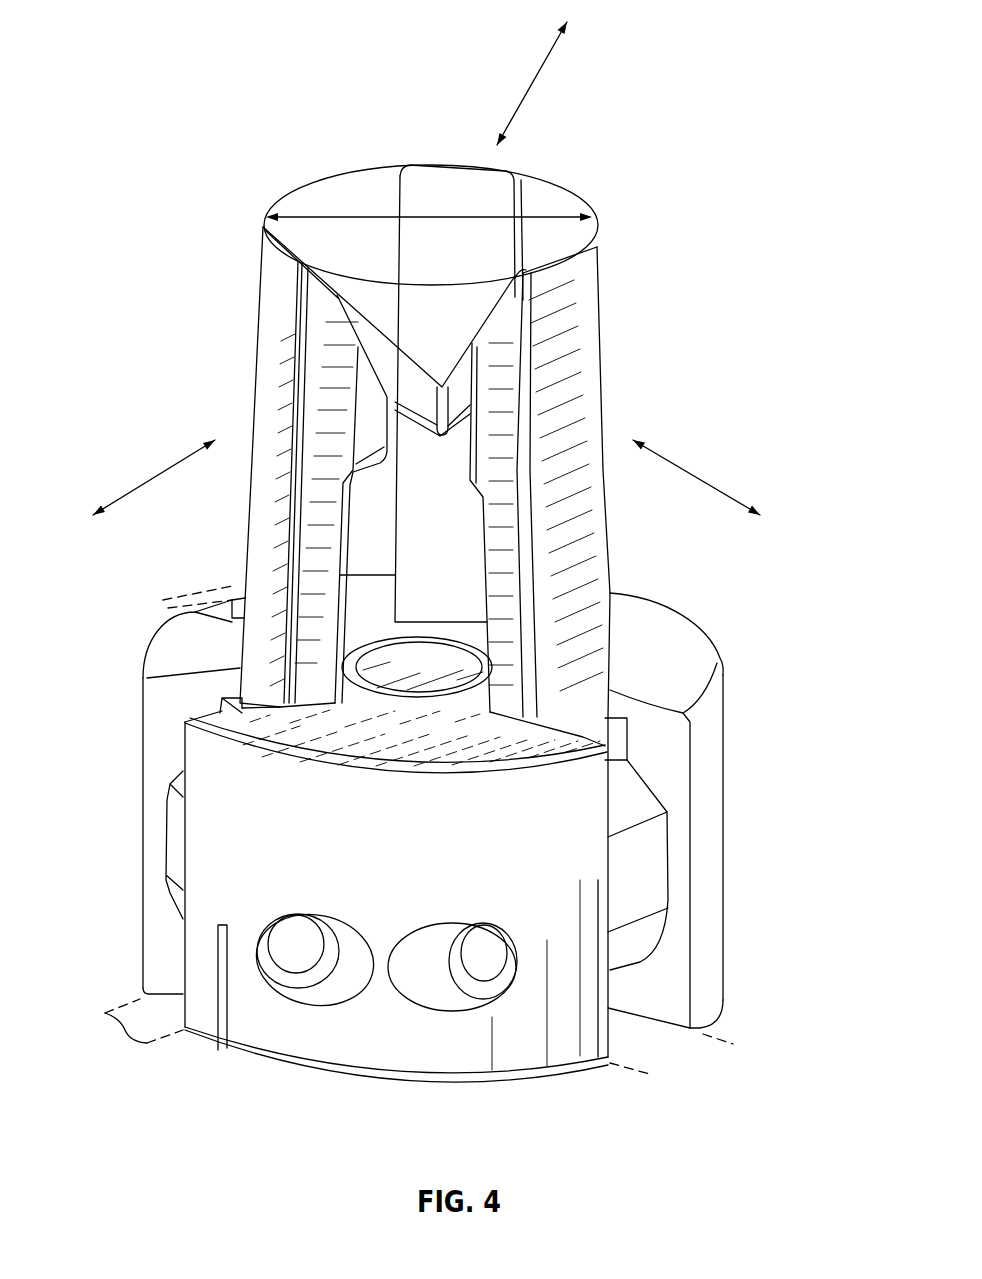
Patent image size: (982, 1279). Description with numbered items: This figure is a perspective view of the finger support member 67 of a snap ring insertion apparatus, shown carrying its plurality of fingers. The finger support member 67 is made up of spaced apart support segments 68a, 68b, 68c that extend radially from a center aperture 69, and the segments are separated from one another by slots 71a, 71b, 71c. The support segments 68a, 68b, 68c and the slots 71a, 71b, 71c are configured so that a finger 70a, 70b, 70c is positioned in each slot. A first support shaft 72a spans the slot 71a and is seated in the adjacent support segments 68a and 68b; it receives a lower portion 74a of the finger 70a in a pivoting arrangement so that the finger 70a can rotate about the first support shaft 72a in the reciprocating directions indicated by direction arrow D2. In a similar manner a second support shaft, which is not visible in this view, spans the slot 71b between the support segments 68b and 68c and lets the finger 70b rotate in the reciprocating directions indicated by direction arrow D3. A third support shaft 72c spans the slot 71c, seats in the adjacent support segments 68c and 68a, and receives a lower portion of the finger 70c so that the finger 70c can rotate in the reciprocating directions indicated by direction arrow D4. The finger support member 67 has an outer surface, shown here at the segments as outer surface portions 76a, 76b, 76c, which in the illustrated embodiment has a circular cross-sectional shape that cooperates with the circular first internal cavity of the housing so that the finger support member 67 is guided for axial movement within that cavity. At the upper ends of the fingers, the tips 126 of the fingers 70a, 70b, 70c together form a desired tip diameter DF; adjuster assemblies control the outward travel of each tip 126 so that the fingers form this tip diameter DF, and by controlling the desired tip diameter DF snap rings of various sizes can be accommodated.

The finger support member 67 is at (683, 638).
The support segment 68a is at (308, 1050).
The support segment 68b is at (723, 783).
The support segment 68c is at (185, 632).
The center aperture 69 is at (418, 652).
The finger 70a is at (582, 377).
The finger 70b is at (421, 176).
The finger 70c is at (268, 332).
The slot 71a is at (653, 1075).
The slot 71b is at (175, 597).
The slot 71c is at (132, 1032).
The first support shaft 72a is at (483, 970).
The third support shaft 72c is at (297, 953).
The lower portion 74a is at (657, 860).
The outer surface 76a is at (583, 1050).
The outer surface 76b is at (723, 940).
The outer surface 76c is at (145, 672).
The tip 126 is at (514, 174).
The tip diameter DF is at (380, 216).
The direction arrow D2 is at (694, 476).
The direction arrow D3 is at (533, 83).
The direction arrow D4 is at (160, 470).